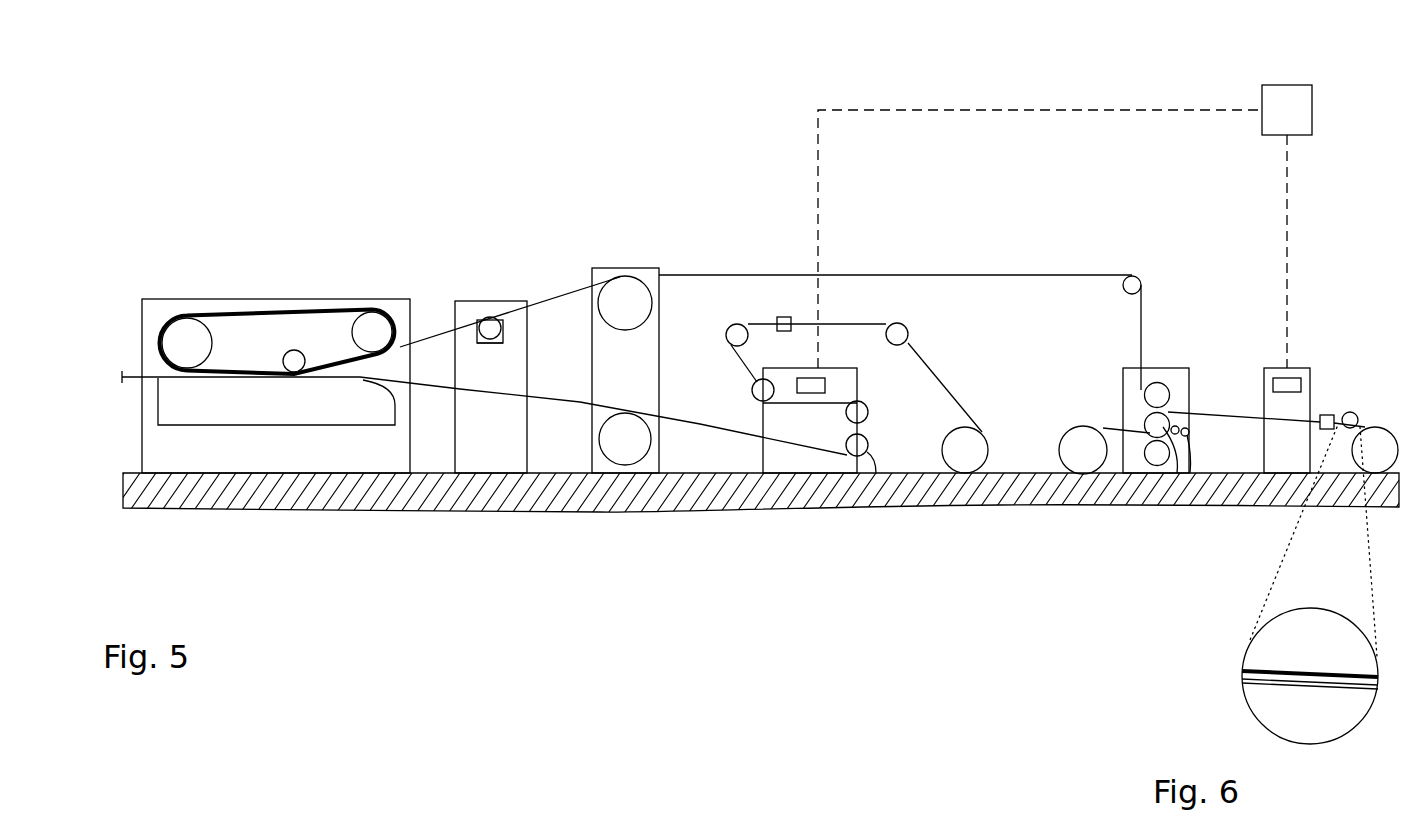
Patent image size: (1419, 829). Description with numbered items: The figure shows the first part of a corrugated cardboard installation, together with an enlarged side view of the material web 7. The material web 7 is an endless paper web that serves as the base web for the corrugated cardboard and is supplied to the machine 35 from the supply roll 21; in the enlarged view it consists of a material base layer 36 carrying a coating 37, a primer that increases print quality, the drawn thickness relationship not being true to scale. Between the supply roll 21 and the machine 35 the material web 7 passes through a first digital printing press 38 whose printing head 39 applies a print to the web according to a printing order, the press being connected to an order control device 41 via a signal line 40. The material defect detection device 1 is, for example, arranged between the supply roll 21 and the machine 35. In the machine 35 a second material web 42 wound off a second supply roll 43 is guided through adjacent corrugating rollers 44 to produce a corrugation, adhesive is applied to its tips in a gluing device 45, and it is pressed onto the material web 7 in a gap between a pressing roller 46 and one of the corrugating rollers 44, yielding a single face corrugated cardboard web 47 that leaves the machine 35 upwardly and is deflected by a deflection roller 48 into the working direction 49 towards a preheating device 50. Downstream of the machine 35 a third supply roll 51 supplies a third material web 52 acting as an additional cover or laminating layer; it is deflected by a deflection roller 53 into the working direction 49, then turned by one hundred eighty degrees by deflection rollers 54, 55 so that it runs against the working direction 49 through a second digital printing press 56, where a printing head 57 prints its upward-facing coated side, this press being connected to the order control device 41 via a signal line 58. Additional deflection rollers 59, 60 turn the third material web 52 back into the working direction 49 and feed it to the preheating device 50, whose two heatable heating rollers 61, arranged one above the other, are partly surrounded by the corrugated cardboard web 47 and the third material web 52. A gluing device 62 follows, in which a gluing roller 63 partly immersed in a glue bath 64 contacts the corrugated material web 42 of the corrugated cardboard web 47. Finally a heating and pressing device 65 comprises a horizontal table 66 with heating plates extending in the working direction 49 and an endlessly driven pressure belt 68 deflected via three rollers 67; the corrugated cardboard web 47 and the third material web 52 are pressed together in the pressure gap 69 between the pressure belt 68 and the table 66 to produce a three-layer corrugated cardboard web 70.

In FIG. 5, the material defect detection device 1 is at (783, 315).
In FIG. 5, the material web 7 is at (1375, 427).
In FIG. 5, the supply roll 21 is at (1373, 467).
In FIG. 5, the machine 35 is at (1168, 366).
In FIG. 6, the material base layer 36 is at (1268, 684).
In FIG. 6, the coating 37 is at (1270, 672).
In FIG. 5, the first digital printing press 38 is at (1303, 366).
In FIG. 5, the printing head 39 is at (1278, 378).
In FIG. 5, the signal line 40 is at (1289, 235).
In FIG. 5, the order control device 41 is at (1286, 85).
In FIG. 5, the second material web 42 is at (1115, 432).
In FIG. 5, the second supply roll 43 is at (1083, 467).
In FIG. 5, the corrugating rollers 44 is at (1158, 458).
In FIG. 5, the gluing device 45 is at (1183, 433).
In FIG. 5, the pressing roller 46 is at (1147, 397).
In FIG. 5, the single face corrugated cardboard web 47 is at (1140, 322).
In FIG. 5, the deflection roller 48 is at (1132, 276).
In FIG. 5, the working direction 49 is at (960, 222).
In FIG. 5, the preheating device 50 is at (637, 267).
In FIG. 5, the third supply roll 51 is at (965, 467).
In FIG. 5, the third material web 52 is at (953, 395).
In FIG. 5, the deflection roller 53 is at (897, 323).
In FIG. 5, the deflection roller 54 is at (737, 324).
In FIG. 5, the deflection roller 55 is at (762, 385).
In FIG. 5, the second digital printing press 56 is at (832, 366).
In FIG. 5, the printing head 57 is at (807, 390).
In FIG. 5, the signal line 58 is at (1002, 110).
In FIG. 5, the deflection roller 59 is at (867, 413).
In FIG. 5, the deflection roller 60 is at (858, 453).
In FIG. 5, the heating rollers 61 is at (620, 302).
In FIG. 5, the gluing device 62 is at (480, 300).
In FIG. 5, the gluing roller 63 is at (490, 324).
In FIG. 5, the glue bath 64 is at (495, 345).
In FIG. 5, the heating and pressing device 65 is at (290, 297).
In FIG. 5, the table 66 is at (202, 410).
In FIG. 5, the rollers 67 is at (187, 350).
In FIG. 5, the pressure belt 68 is at (230, 313).
In FIG. 5, the pressure gap 69 is at (172, 372).
In FIG. 5, the three-layer corrugated cardboard web 70 is at (133, 373).